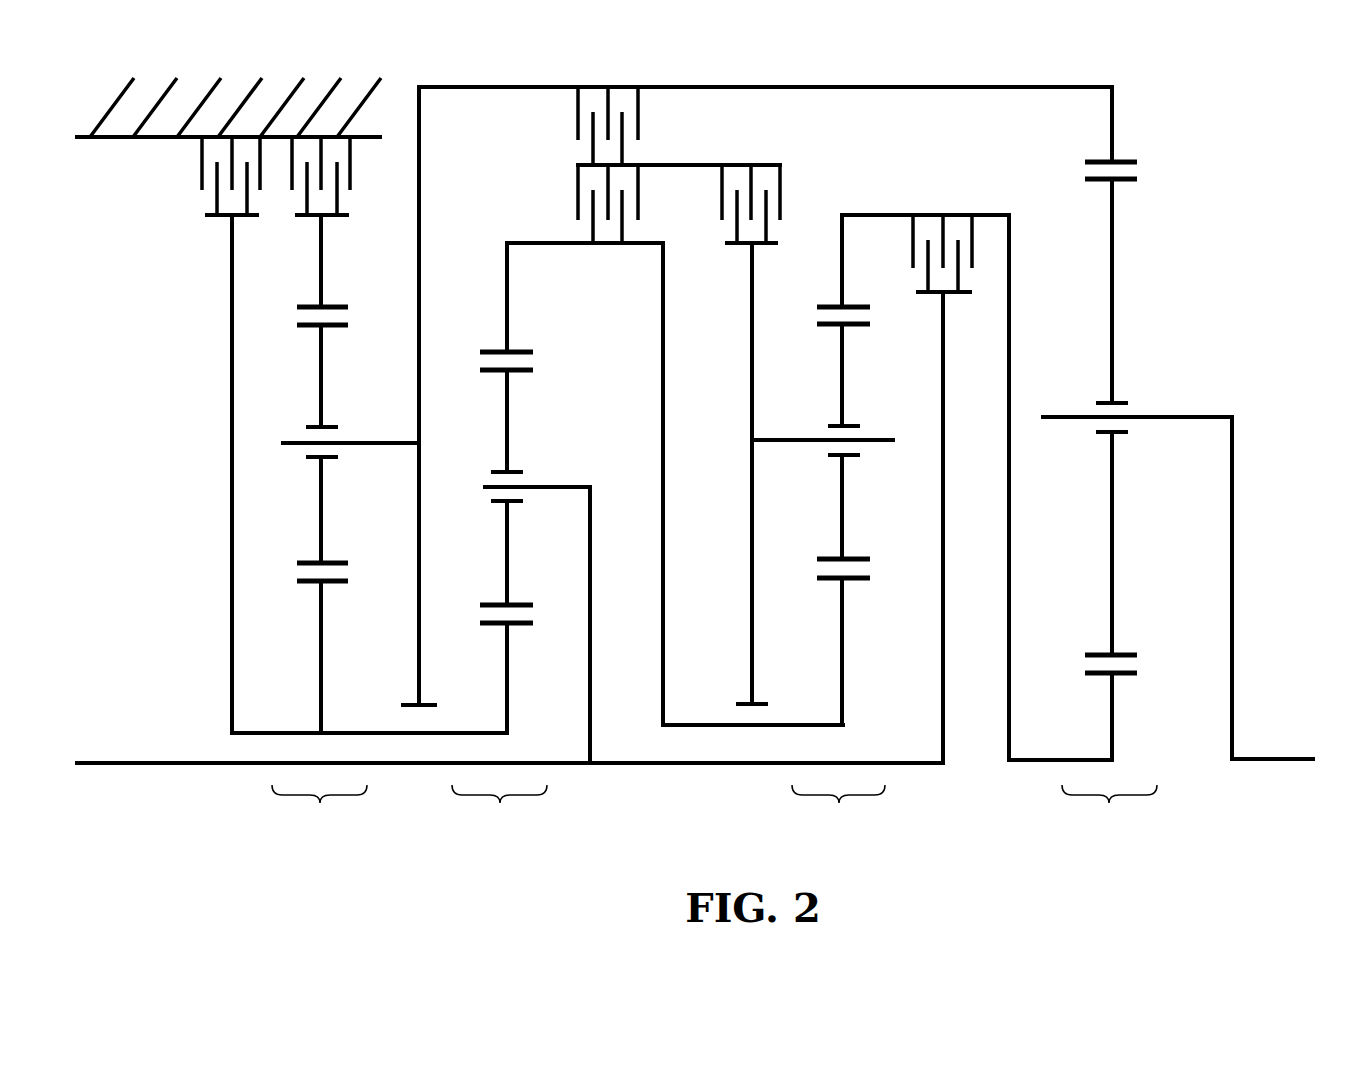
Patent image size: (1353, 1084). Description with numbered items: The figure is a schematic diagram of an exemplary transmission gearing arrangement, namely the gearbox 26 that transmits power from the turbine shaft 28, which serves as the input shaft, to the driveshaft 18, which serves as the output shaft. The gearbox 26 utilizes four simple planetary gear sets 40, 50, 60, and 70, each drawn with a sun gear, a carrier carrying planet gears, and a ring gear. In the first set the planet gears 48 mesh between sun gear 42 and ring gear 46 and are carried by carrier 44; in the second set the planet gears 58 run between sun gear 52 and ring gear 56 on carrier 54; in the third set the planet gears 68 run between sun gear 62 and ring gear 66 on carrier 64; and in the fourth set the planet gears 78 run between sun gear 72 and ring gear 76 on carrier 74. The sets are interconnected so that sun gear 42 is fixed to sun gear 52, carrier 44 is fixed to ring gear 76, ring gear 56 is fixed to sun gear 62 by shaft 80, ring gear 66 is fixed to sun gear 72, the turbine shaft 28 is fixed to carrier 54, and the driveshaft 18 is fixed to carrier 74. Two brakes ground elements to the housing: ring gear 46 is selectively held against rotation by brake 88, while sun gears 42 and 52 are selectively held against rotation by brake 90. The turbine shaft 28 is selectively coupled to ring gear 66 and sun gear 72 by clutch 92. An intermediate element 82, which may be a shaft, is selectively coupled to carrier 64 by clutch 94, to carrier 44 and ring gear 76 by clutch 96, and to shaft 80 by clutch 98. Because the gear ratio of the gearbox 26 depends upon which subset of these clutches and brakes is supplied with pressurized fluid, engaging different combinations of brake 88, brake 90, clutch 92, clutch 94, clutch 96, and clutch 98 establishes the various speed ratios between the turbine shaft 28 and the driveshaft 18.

The driveshaft 18 is at (1257, 759).
The gearbox 26 is at (743, 782).
The turbine shaft 28 is at (210, 763).
The planetary gear set 40 is at (319, 810).
The sun gear 42 is at (321, 675).
The carrier 44 is at (419, 190).
The ring gear 46 is at (321, 288).
The planet gears of first planetary gear set 48 is at (321, 402).
The planetary gear set 50 is at (499, 810).
The sun gear 52 is at (507, 692).
The carrier 54 is at (590, 632).
The ring gear 56 is at (507, 315).
The planet gears of second planetary gear set 58 is at (507, 446).
The planetary gear set 60 is at (952, 525).
The sun gear 62 is at (842, 662).
The carrier 64 is at (752, 352).
The ring gear 66 is at (842, 242).
The planet gears of third planetary gear set 68 is at (842, 398).
The planetary gear set 70 is at (1109, 810).
The sun gear 72 is at (1112, 740).
The carrier 74 is at (1147, 417).
The ring gear 76 is at (1112, 151).
The planet gears of fourth planetary gear set 78 is at (1112, 292).
The shaft 80 is at (663, 445).
The intermediate element 82 is at (653, 165).
The brake 88 is at (350, 165).
The brake 90 is at (202, 165).
The clutch 92 is at (950, 215).
The clutch 94 is at (733, 165).
The clutch 96 is at (578, 103).
The clutch 98 is at (578, 178).